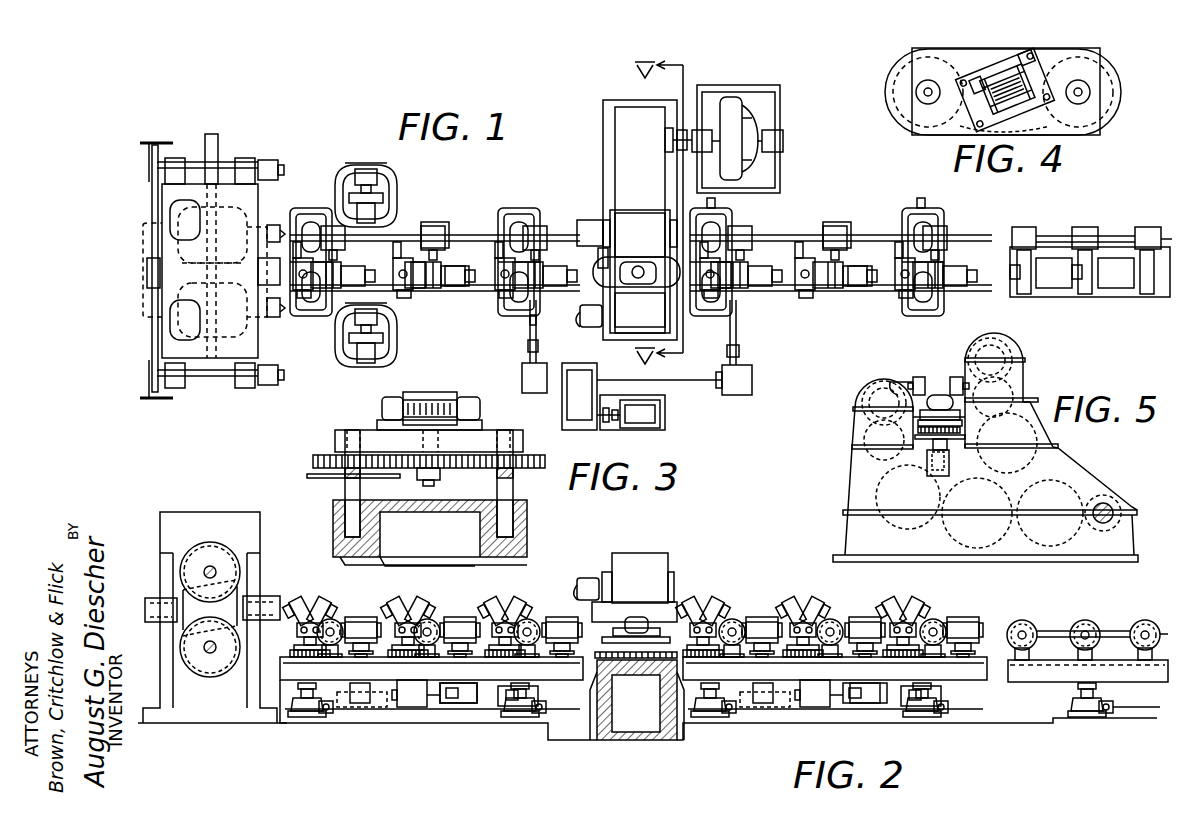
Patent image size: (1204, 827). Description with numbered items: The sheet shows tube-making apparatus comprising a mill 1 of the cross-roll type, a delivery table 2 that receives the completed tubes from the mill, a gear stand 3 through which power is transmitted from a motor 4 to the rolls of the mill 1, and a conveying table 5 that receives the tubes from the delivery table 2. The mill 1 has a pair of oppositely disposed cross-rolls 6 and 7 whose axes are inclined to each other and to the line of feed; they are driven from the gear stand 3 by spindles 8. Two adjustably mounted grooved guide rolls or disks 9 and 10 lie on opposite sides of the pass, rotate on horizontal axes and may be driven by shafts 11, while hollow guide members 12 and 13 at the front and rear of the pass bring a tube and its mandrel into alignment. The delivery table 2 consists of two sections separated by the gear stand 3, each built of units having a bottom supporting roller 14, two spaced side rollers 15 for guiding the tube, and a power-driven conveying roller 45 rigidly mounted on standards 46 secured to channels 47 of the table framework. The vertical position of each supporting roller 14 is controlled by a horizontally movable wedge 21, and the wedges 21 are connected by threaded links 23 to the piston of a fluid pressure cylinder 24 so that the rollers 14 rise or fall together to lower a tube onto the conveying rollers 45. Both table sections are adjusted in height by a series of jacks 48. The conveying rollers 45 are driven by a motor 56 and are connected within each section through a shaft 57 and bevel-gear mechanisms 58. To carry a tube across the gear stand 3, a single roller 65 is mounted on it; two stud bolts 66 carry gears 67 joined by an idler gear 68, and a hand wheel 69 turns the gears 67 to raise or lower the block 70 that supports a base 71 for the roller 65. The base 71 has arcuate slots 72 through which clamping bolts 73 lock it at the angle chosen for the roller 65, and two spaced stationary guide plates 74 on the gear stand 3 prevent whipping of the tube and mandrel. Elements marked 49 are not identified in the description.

In FIG. 1, the mill 1 is at (250, 345).
In FIG. 2, the mill 1 is at (252, 532).
In FIG. 1, the delivery table 2 is at (484, 295).
In FIG. 1, the gear stand 3 is at (625, 183).
In FIG. 5, the gear stand 3 is at (863, 470).
In FIG. 3, the gear stand 3 is at (527, 520).
In FIG. 2, the gear stand 3 is at (630, 565).
In FIG. 1, the motor 4 is at (734, 105).
In FIG. 1, the conveying table 5 is at (1092, 228).
In FIG. 2, the conveying table 5 is at (1050, 660).
In FIG. 1, the cross-roll 6 is at (188, 218).
In FIG. 2, the cross-roll 6 is at (188, 603).
In FIG. 1, the cross-roll 7 is at (195, 327).
In FIG. 1, the spindles 8 is at (279, 230).
In FIG. 5, the spindles 8 is at (872, 388).
In FIG. 2, the spindles 8 is at (585, 578).
In FIG. 1, the grooved guide roll 9 is at (190, 272).
In FIG. 2, the grooved guide roll 9 is at (212, 555).
In FIG. 2, the grooved guide roll 10 is at (212, 672).
In FIG. 1, the shafts 11 is at (213, 150).
In FIG. 2, the shafts 11 is at (208, 660).
In FIG. 1, the hollow guide member 12 is at (150, 268).
In FIG. 2, the hollow guide member 12 is at (154, 603).
In FIG. 1, the hollow guide member 13 is at (275, 268).
In FIG. 2, the hollow guide member 13 is at (268, 605).
In FIG. 1, the bottom supporting roller 14 is at (455, 290).
In FIG. 2, the bottom supporting roller 14 is at (462, 615).
In FIG. 1, the side rollers 15 is at (408, 260).
In FIG. 2, the side rollers 15 is at (400, 600).
In FIG. 2, the wedge 21 is at (450, 705).
In FIG. 2, the links 23 is at (360, 705).
In FIG. 2, the fluid pressure cylinder 24 is at (410, 707).
In FIG. 2, the conveying roller 45 is at (328, 620).
In FIG. 2, the standards 46 is at (283, 684).
In FIG. 2, the channels 47 is at (975, 672).
In FIG. 1, the jacks 48 is at (512, 208).
In FIG. 2, the jacks 48 is at (305, 718).
In FIG. 1, the reel 49 is at (372, 184).
In FIG. 1, the motor 56 is at (658, 415).
In FIG. 1, the shaft 57 is at (405, 235).
In FIG. 1, the bevel-gear mechanisms 58 is at (440, 228).
In FIG. 1, the roller 65 is at (640, 262).
In FIG. 4, the roller 65 is at (1000, 68).
In FIG. 5, the roller 65 is at (922, 398).
In FIG. 3, the roller 65 is at (445, 395).
In FIG. 2, the roller 65 is at (640, 618).
In FIG. 3, the stud bolts 66 is at (350, 496).
In FIG. 4, the gears 67 is at (1115, 72).
In FIG. 3, the gears 67 is at (313, 462).
In FIG. 3, the idler gear 68 is at (440, 472).
In FIG. 3, the hand wheel 69 is at (310, 475).
In FIG. 4, the block 70 is at (1060, 75).
In FIG. 3, the block 70 is at (485, 442).
In FIG. 4, the base 71 is at (1036, 70).
In FIG. 3, the base 71 is at (380, 425).
In FIG. 4, the arcuate slots 72 is at (1008, 64).
In FIG. 4, the clamping bolts 73 is at (992, 126).
In FIG. 1, the guide plates 74 is at (610, 238).
In FIG. 5, the guide plates 74 is at (956, 378).
In FIG. 2, the guide plates 74 is at (668, 612).